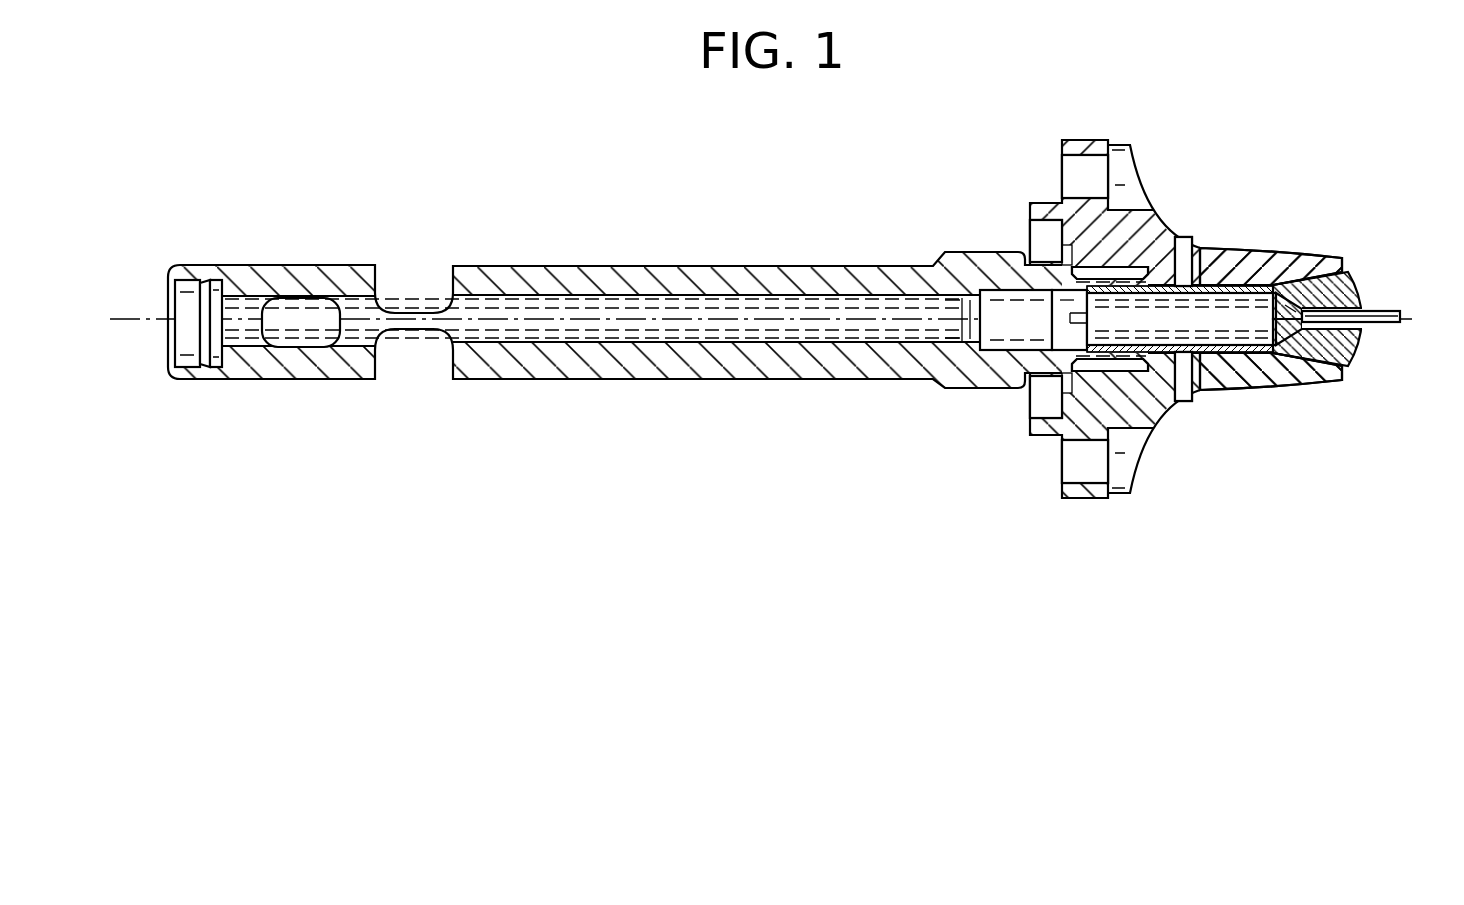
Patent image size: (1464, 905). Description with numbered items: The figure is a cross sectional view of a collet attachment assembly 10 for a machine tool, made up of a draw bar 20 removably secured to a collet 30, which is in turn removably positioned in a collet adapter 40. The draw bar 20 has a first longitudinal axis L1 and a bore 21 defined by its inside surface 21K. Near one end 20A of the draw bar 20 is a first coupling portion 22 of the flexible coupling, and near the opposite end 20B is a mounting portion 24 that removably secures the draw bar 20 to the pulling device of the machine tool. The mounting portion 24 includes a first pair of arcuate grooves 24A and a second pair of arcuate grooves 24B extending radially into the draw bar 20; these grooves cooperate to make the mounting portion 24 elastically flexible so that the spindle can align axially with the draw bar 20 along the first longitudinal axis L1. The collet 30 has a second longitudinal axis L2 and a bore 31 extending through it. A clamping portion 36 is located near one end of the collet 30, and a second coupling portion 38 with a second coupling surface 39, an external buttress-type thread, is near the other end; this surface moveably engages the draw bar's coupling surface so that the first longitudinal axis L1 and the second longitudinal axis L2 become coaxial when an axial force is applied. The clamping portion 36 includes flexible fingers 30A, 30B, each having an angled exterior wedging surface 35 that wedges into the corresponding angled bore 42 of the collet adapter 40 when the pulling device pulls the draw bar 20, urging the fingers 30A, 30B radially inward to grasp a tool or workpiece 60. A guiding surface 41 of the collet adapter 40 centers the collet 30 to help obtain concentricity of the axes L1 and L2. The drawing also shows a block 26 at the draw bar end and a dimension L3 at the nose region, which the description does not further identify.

The collet attachment assembly 10 is at (855, 172).
The draw bar 20 is at (590, 272).
The one end of the draw bar 20A is at (1162, 240).
The opposite end of the draw bar 20B is at (160, 265).
The bore 21 is at (525, 314).
The inside surface 21K is at (553, 343).
The first coupling portion 22 is at (1106, 265).
The mounting portion 24 is at (457, 252).
The first pair of arcuate grooves 24A is at (303, 332).
The second pair of arcuate grooves 24B is at (408, 280).
The coupling block 26 is at (1046, 352).
The collet 30 is at (1225, 352).
The flexible finger 30A is at (1347, 347).
The flexible finger 30B is at (1340, 292).
The bore 31 is at (1135, 355).
The angled exterior wedging surface 35 is at (1330, 258).
The clamping portion 36 is at (1297, 352).
The second coupling portion 38 is at (1118, 357).
The second coupling surface 39 is at (1117, 498).
The collet adapter 40 is at (1233, 320).
The guiding surface 41 is at (1190, 365).
The angled bore 42 is at (1315, 353).
The tool or workpiece 60 is at (1398, 318).
The first longitudinal axis L1 is at (693, 320).
The second longitudinal axis L2 is at (1145, 355).
The length L3 is at (1240, 283).